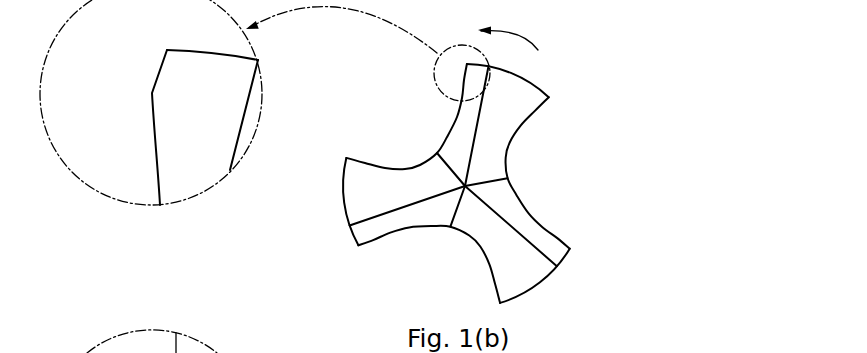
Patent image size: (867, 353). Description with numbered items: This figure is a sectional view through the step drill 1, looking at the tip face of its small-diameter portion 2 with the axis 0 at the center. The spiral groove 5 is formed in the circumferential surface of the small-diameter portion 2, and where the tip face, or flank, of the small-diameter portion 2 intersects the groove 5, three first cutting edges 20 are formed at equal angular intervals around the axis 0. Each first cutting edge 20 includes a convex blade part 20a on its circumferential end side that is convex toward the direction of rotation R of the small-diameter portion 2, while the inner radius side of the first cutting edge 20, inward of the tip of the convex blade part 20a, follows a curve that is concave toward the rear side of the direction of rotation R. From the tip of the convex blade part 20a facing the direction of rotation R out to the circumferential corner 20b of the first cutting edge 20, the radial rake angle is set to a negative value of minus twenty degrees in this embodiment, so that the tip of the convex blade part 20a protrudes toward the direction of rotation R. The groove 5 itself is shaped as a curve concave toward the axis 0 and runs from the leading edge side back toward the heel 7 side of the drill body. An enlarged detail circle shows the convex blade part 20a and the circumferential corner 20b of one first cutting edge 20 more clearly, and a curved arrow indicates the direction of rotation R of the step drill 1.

The step drill 1 is at (685, 77).
The small-diameter portion 2 is at (551, 72).
The spiral groove 5 is at (403, 168).
The heel 7 is at (346, 158).
The first cutting edge 20 is at (456, 122).
The convex blade part 20a is at (567, 240).
The circumferential corner 20b is at (571, 249).
The axis 0 is at (469, 191).
The direction of rotation R is at (532, 35).